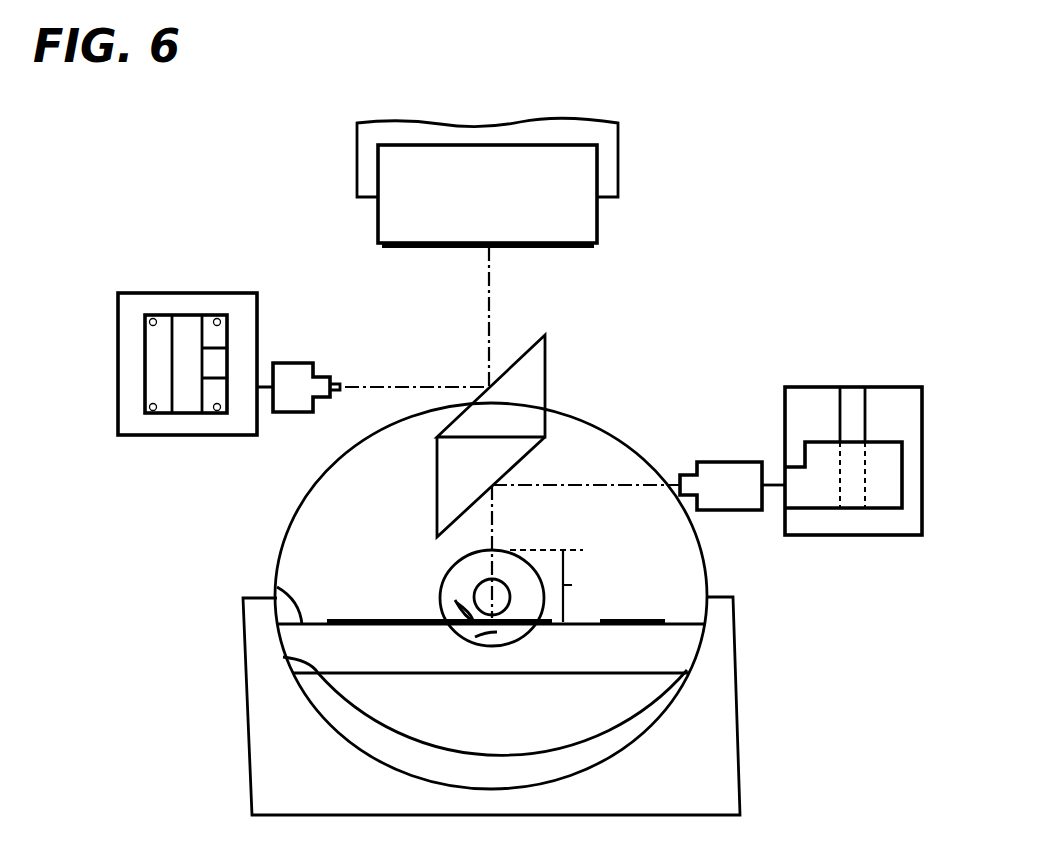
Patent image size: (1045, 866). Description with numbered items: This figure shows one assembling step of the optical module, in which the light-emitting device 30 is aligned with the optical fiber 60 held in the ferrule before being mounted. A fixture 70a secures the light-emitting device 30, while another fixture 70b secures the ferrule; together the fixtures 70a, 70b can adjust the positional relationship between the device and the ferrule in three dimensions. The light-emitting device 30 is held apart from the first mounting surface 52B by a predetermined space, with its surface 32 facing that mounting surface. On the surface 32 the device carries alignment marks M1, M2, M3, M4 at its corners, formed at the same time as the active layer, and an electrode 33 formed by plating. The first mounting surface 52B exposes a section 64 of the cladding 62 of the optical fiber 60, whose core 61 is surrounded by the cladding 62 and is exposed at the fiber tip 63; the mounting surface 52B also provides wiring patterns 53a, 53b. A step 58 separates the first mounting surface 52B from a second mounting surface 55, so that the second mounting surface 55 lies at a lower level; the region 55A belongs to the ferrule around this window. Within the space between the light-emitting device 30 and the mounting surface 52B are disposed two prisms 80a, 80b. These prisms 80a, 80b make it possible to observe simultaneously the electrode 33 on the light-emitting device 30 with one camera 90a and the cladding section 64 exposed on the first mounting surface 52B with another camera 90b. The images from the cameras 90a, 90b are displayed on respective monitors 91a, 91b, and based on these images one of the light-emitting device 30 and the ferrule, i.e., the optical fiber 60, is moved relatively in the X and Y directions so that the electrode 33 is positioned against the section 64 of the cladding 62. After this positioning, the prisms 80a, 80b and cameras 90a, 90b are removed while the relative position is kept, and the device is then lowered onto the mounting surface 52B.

The light-emitting device 30 is at (598, 205).
The surface 32 is at (577, 246).
The electrode 33 is at (540, 248).
The first mounting surface 52B is at (273, 593).
The wiring pattern 53a is at (350, 620).
The wiring pattern 53b is at (647, 618).
The second mounting surface 55 is at (283, 657).
The ring 55A is at (323, 532).
The step 58 is at (293, 638).
The optical fiber 60 is at (445, 572).
The core 61 is at (483, 588).
The cladding 62 is at (440, 610).
The tip 63 is at (559, 586).
The section of the cladding 64 is at (447, 612).
The fixture 70a is at (608, 162).
The fixture 70b is at (717, 692).
The prism 80a is at (532, 397).
The prism 80b is at (438, 483).
The camera 90a is at (295, 373).
The camera 90b is at (730, 473).
The monitor 91a is at (223, 290).
The monitor 91b is at (815, 387).
The alignment mark M1 is at (153, 315).
The alignment mark M2 is at (256, 313).
The alignment mark M3 is at (215, 413).
The alignment mark M4 is at (153, 413).